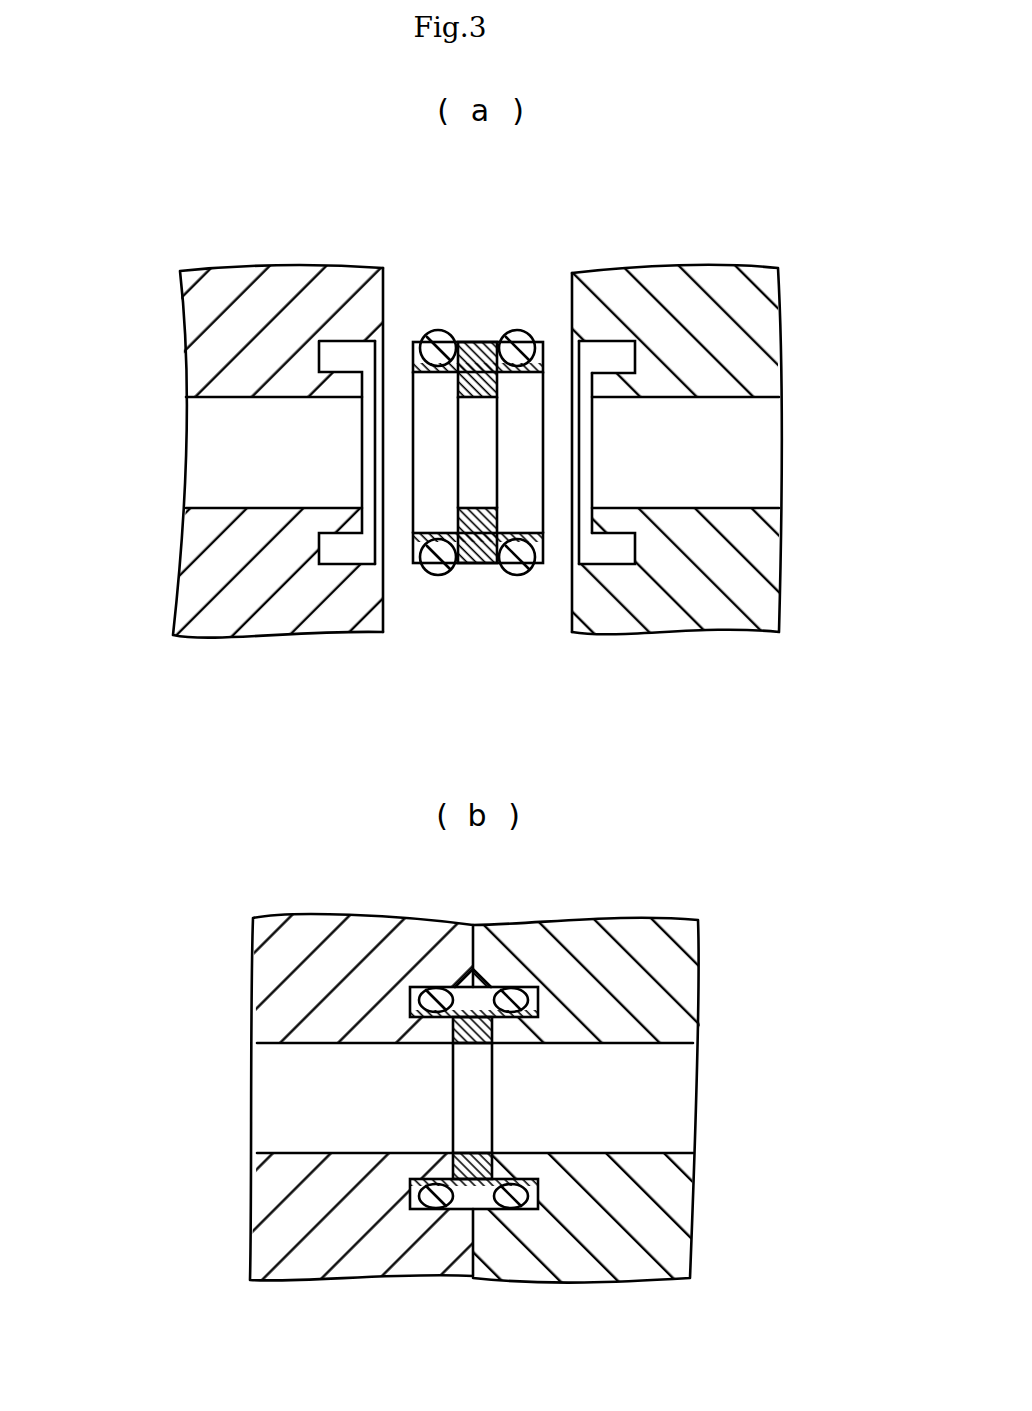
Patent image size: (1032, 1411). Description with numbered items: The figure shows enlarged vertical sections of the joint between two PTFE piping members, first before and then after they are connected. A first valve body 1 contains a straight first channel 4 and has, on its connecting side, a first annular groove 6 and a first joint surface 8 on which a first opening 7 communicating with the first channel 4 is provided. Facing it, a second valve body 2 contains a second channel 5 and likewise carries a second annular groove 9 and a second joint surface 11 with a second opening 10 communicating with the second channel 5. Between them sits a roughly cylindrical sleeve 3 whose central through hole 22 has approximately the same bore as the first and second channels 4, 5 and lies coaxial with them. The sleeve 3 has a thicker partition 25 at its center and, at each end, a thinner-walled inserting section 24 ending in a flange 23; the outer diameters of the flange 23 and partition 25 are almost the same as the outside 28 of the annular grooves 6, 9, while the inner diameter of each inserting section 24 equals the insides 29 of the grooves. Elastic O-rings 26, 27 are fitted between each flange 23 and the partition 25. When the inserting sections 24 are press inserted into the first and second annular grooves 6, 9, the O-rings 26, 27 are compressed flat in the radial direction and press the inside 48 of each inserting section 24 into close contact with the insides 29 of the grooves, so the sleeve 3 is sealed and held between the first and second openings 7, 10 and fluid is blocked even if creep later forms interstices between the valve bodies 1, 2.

The first valve body 1 is at (376, 752).
The second valve body 2 is at (704, 741).
The sleeve 3 is at (536, 704).
The first channel 4 is at (216, 476).
The second channel 5 is at (735, 462).
The first annular groove 6 is at (335, 355).
The first opening 7 is at (386, 562).
The first joint surface 8 is at (383, 510).
The second annular groove 9 is at (605, 367).
The second opening 10 is at (569, 478).
The second joint surface 11 is at (572, 612).
The through hole 22 is at (483, 448).
The flange 23 is at (413, 345).
The inserting section 24 is at (413, 568).
The partition 25 is at (477, 341).
The O-ring 26 is at (444, 330).
The O-ring 27 is at (524, 330).
The outside of annular groove 28 is at (623, 352).
The inside of annular groove 29 is at (667, 397).
The inside of inserting section 48 is at (520, 533).